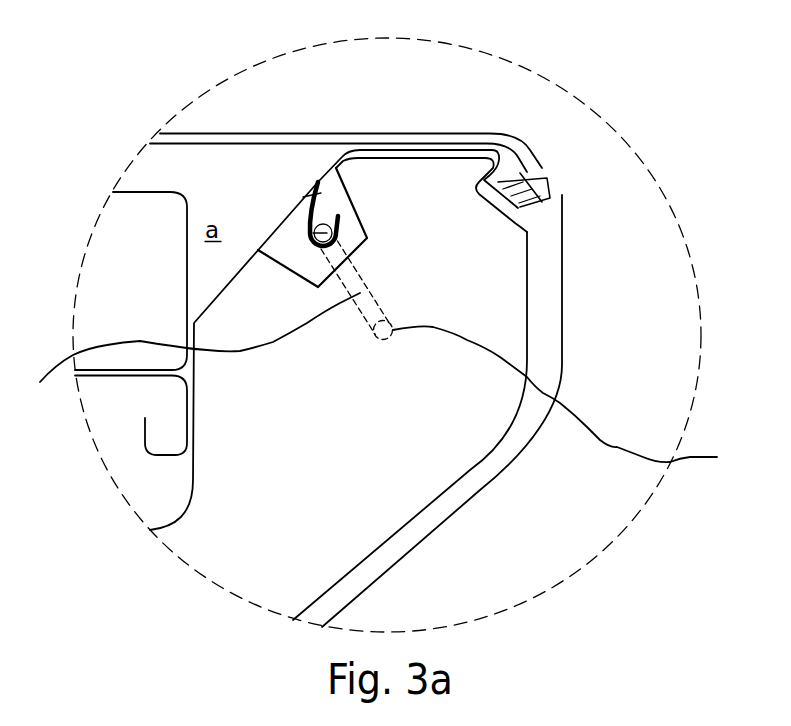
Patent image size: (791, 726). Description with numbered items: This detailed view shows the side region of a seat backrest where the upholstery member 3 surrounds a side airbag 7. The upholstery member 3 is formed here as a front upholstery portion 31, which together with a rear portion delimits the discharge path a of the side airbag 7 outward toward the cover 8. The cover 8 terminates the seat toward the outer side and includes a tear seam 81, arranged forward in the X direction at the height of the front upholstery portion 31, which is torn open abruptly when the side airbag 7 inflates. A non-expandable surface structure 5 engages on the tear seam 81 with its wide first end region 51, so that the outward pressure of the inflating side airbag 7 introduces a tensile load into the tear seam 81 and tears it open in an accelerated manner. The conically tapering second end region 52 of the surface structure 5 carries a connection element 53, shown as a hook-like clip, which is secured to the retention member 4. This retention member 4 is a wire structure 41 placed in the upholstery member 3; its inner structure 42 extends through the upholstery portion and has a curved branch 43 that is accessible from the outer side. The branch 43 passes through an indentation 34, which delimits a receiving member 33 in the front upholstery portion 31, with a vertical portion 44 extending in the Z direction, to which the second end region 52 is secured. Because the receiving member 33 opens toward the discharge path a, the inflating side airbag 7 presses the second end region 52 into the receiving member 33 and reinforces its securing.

The upholstery member 3 is at (323, 132).
The front upholstery portion 31 is at (425, 157).
The receiving member 33 is at (343, 227).
The indentation 34 is at (318, 185).
The retention member 4 is at (297, 253).
The wire structure 41 is at (385, 302).
The inner structure 42 is at (394, 381).
The curved branch 43 is at (73, 355).
The vertical portion 44 is at (302, 233).
The non-expandable surface structure 5 is at (473, 134).
The first end region 51 is at (512, 143).
The second end region 52 is at (320, 192).
The connection element 53 is at (313, 225).
The side airbag 7 is at (103, 311).
The cover 8 is at (563, 347).
The tear seam 81 is at (540, 177).